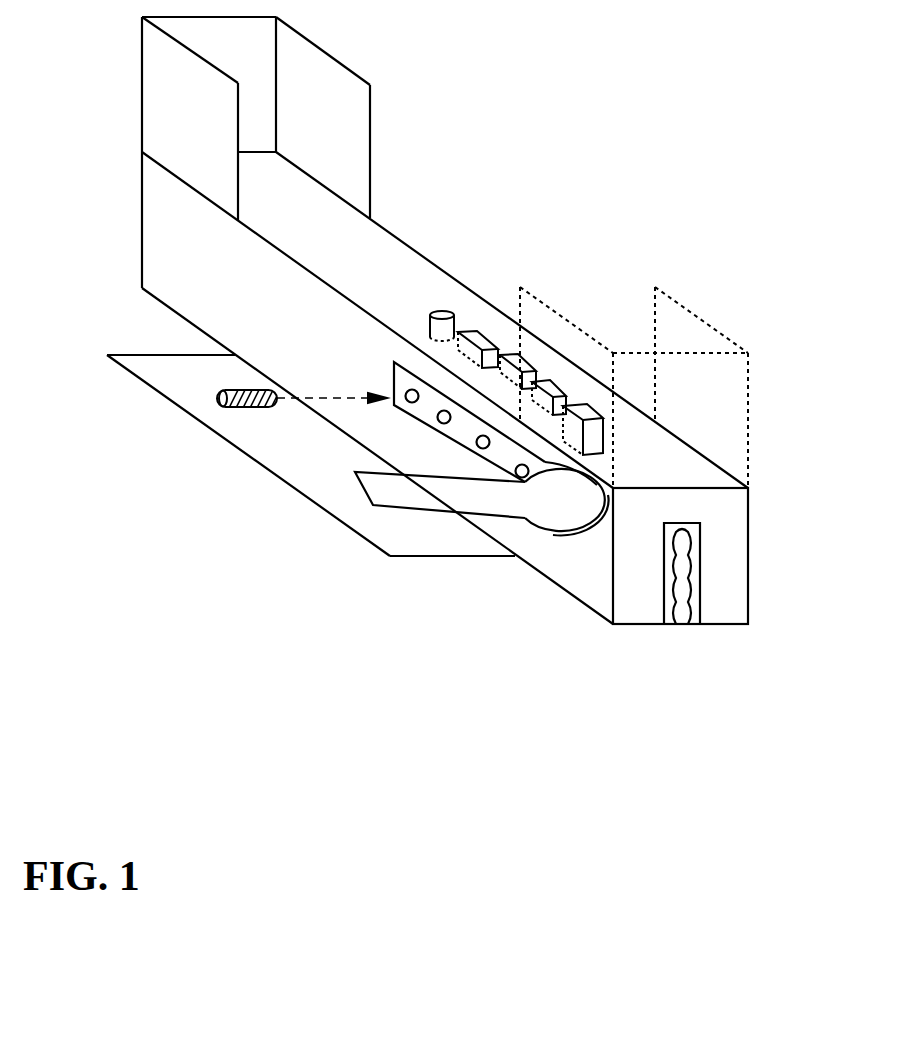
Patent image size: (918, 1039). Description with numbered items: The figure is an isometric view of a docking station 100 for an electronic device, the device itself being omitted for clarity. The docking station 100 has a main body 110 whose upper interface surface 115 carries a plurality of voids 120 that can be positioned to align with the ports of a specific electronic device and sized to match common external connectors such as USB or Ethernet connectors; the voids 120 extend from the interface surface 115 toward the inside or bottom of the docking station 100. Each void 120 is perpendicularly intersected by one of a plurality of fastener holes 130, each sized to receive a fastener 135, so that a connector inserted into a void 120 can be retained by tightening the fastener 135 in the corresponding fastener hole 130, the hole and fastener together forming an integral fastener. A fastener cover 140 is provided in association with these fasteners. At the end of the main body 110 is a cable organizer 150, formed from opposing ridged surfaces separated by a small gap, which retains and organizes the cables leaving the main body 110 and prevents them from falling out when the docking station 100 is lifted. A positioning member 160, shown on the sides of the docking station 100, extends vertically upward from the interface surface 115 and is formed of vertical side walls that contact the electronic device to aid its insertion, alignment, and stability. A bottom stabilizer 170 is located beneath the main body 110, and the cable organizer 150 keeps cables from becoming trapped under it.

The docking station 100 is at (95, 190).
The main body 110 is at (400, 237).
The interface surface 115 is at (413, 290).
The voids 120 is at (452, 317).
The fastener holes 130 is at (516, 471).
The fastener 135 is at (217, 397).
The fastener cover 140 is at (445, 503).
The cable organizer 150 is at (663, 605).
The positioning member 160 is at (370, 173).
The bottom stabilizer 170 is at (158, 372).